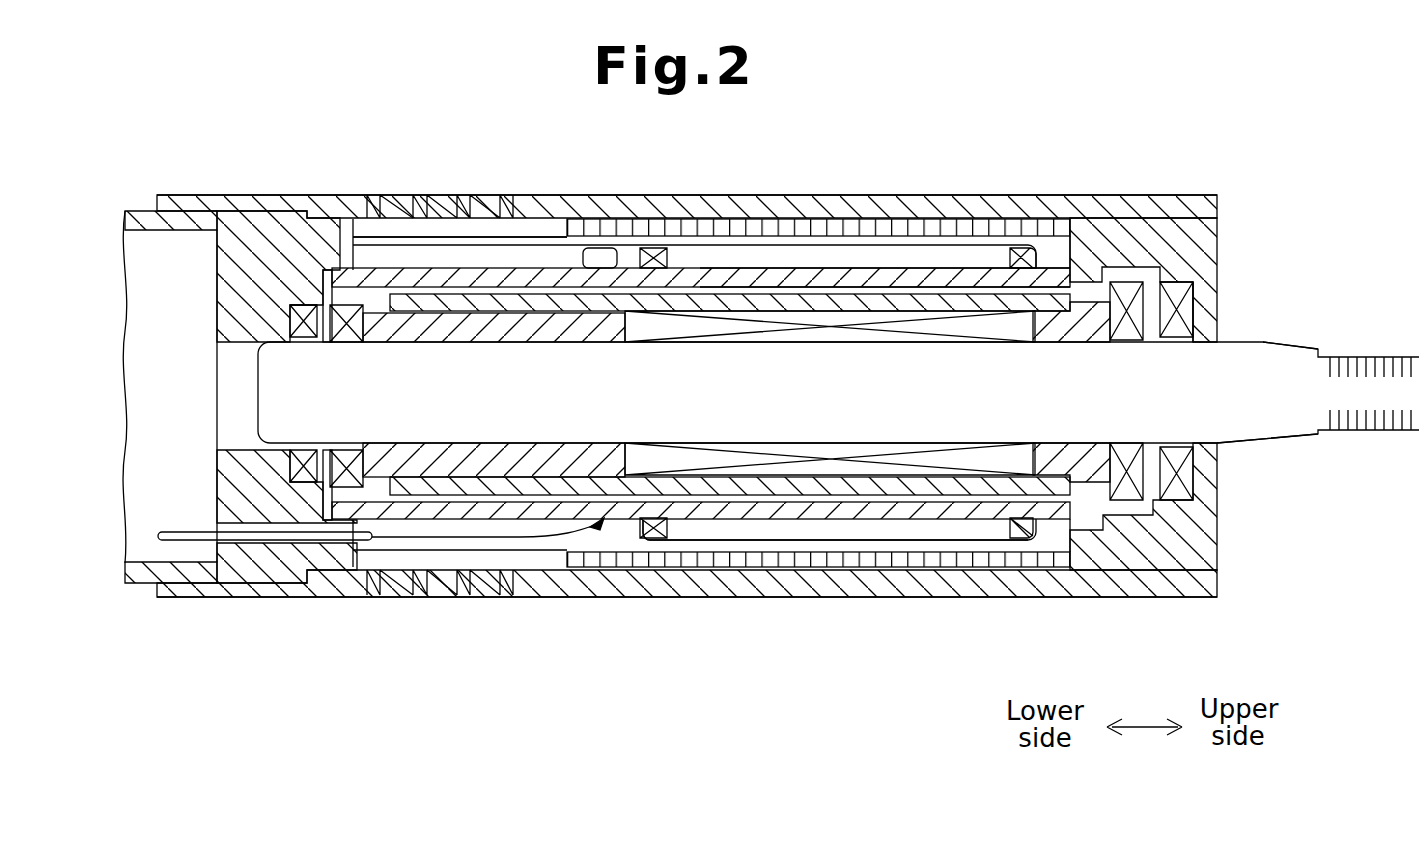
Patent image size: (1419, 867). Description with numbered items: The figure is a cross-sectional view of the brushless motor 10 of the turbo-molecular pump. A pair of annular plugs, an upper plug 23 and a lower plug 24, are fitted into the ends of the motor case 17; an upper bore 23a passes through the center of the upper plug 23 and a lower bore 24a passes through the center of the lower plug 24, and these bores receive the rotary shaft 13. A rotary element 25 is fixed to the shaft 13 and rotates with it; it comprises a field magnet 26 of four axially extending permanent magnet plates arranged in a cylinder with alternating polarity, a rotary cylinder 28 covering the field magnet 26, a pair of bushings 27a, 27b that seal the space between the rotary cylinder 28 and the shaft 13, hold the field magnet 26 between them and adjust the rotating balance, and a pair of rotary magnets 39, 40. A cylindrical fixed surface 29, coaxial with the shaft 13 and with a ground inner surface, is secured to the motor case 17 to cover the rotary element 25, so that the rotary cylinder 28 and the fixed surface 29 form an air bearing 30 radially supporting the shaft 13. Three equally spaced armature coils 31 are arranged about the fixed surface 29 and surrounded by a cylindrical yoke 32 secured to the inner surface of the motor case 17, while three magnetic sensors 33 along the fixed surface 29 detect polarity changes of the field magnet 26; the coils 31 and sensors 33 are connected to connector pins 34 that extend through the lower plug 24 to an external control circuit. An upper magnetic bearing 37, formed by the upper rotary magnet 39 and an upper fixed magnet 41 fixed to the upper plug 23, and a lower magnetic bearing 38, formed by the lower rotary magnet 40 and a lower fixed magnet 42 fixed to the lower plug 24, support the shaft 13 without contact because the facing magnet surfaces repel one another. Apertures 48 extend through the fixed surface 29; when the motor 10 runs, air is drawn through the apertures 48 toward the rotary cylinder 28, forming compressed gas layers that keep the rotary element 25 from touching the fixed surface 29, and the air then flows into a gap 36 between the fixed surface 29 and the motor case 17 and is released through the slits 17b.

The motor 10 is at (1182, 191).
The rotary shaft 13 is at (1290, 348).
The motor case 17 is at (1117, 193).
The slits 17b is at (377, 195).
The upper plug 23 is at (1218, 538).
The upper bore 23a is at (1218, 428).
The lower plug 24 is at (225, 486).
The lower bore 24a is at (229, 438).
The rotary element 25 is at (640, 487).
The field magnet 26 is at (838, 345).
The upper bushing 27a is at (1062, 345).
The lower bushing 27b is at (505, 345).
The rotary cylinder 28 is at (780, 312).
The fixed surface 29 is at (761, 272).
The air bearing 30 is at (817, 262).
The armature coils 31 is at (880, 262).
The yoke 32 is at (734, 232).
The magnetic sensors 33 is at (597, 244).
The connector pins 34 is at (202, 536).
The gap 36 is at (540, 248).
The upper magnetic bearing 37 is at (1197, 309).
The lower magnetic bearing 38 is at (286, 323).
The upper rotary magnet 39 is at (1127, 344).
The lower rotary magnet 40 is at (342, 346).
The upper fixed magnet 41 is at (1172, 344).
The lower fixed magnet 42 is at (298, 342).
The apertures 48 is at (679, 244).